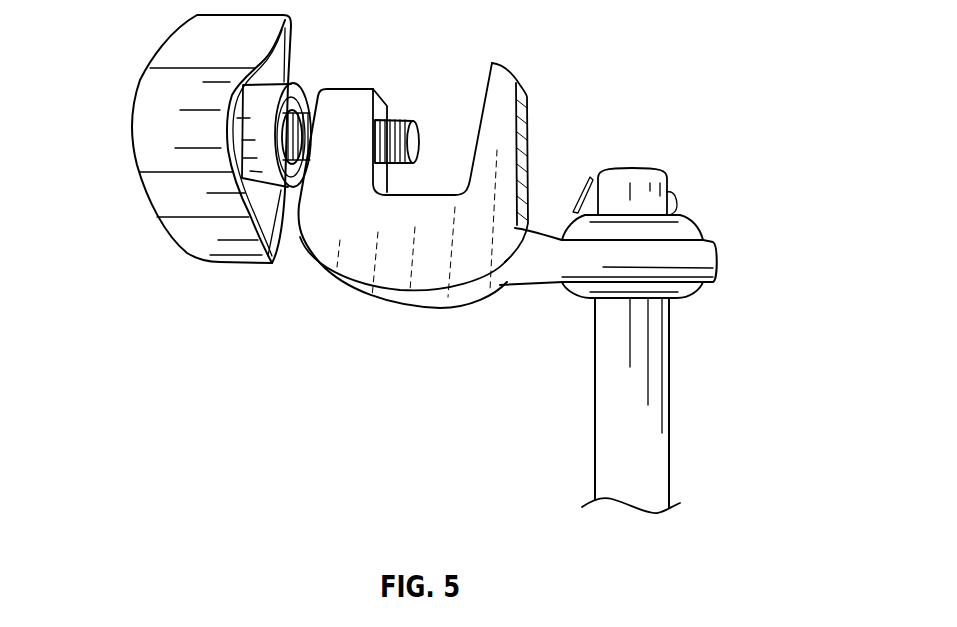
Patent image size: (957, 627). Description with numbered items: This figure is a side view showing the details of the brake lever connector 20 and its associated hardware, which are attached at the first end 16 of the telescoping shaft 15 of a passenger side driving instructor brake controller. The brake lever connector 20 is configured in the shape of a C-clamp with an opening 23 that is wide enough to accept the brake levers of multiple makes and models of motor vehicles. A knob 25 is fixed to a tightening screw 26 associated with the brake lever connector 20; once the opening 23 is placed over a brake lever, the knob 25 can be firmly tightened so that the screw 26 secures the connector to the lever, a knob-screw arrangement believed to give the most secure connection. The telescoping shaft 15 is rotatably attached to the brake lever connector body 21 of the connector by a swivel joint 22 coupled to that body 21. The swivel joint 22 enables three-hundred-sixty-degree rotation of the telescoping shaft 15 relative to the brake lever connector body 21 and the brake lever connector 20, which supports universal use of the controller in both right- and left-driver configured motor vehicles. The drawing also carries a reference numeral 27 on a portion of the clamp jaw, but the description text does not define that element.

The telescoping shaft 15 is at (603, 440).
The first end of the telescoping shaft 16 is at (700, 433).
The brake lever connector 20 is at (368, 263).
The brake lever connector body 21 is at (540, 275).
The swivel joint 22 is at (682, 300).
The opening 23 is at (441, 116).
The knob 25 is at (138, 128).
The tightening screw 26 is at (390, 120).
The jaw tab 27 is at (483, 118).